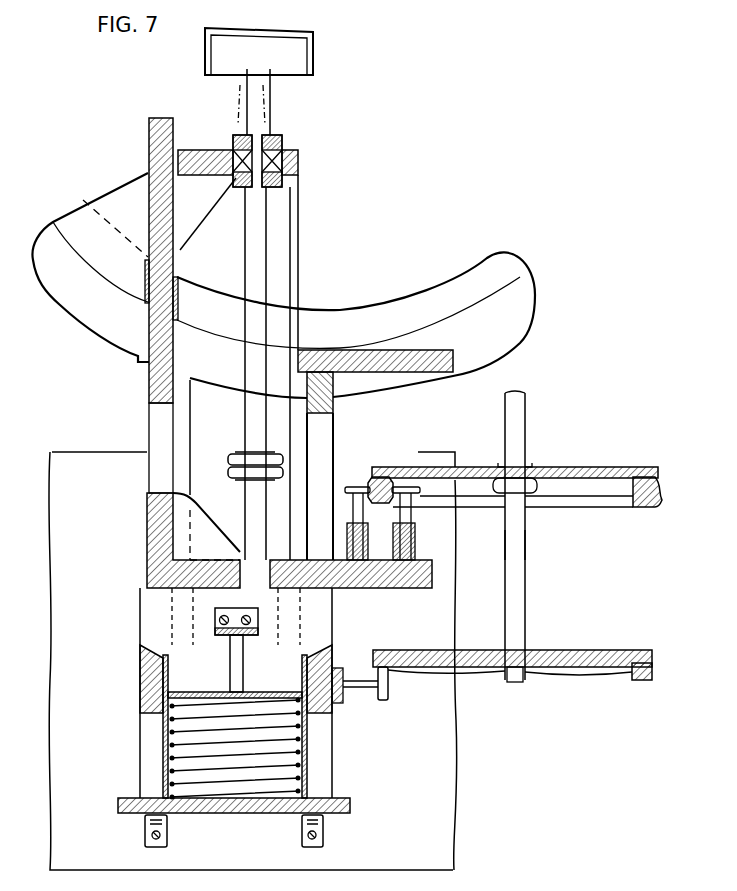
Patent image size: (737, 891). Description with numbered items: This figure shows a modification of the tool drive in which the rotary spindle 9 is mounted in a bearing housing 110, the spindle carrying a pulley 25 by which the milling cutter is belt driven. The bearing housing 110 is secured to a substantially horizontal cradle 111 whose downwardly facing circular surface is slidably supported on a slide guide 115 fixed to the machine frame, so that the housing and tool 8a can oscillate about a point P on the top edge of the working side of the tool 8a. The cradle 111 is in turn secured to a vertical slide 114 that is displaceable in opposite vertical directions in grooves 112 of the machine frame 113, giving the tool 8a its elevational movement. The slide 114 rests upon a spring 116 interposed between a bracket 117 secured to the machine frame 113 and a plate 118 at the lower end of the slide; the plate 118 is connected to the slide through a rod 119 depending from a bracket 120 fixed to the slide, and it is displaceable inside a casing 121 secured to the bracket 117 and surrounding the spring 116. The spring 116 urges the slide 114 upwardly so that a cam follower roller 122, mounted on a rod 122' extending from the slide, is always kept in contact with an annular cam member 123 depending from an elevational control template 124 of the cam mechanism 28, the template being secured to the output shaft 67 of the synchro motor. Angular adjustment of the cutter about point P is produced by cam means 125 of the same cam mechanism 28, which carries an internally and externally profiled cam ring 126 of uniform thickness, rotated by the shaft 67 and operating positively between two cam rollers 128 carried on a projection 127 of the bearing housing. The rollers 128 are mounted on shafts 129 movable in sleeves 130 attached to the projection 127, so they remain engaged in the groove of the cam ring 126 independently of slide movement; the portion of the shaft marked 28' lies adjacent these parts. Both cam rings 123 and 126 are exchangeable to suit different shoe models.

The point P is at (313, 32).
The tool 8a is at (313, 60).
The rotary spindle 9 is at (268, 240).
The bearing housing 110 is at (150, 172).
The cradle 111 is at (468, 270).
The slide guide 115 is at (519, 320).
The pulley 25 is at (237, 452).
The projection 127 is at (415, 589).
The cam rollers 128 is at (413, 483).
The shafts 129 is at (405, 513).
The sleeves 130 is at (415, 548).
The cam means 125 is at (606, 440).
The cam mechanism 28 is at (522, 468).
The cam ring 126 is at (648, 510).
The output shaft 67 is at (522, 618).
The rod portion 28' is at (541, 544).
The elevational control template 124 is at (634, 652).
The annular cam member 123 is at (645, 680).
The rod 122' is at (510, 688).
The cam follower roller 122 is at (388, 688).
The machine frame 113 is at (57, 487).
The grooves 112 is at (145, 597).
The vertical slide 114 is at (158, 619).
The bracket 120 is at (258, 630).
The rod 119 is at (230, 678).
The plate 118 is at (287, 697).
The casing 121 is at (307, 773).
The spring 116 is at (307, 740).
The bracket 117 is at (235, 813).